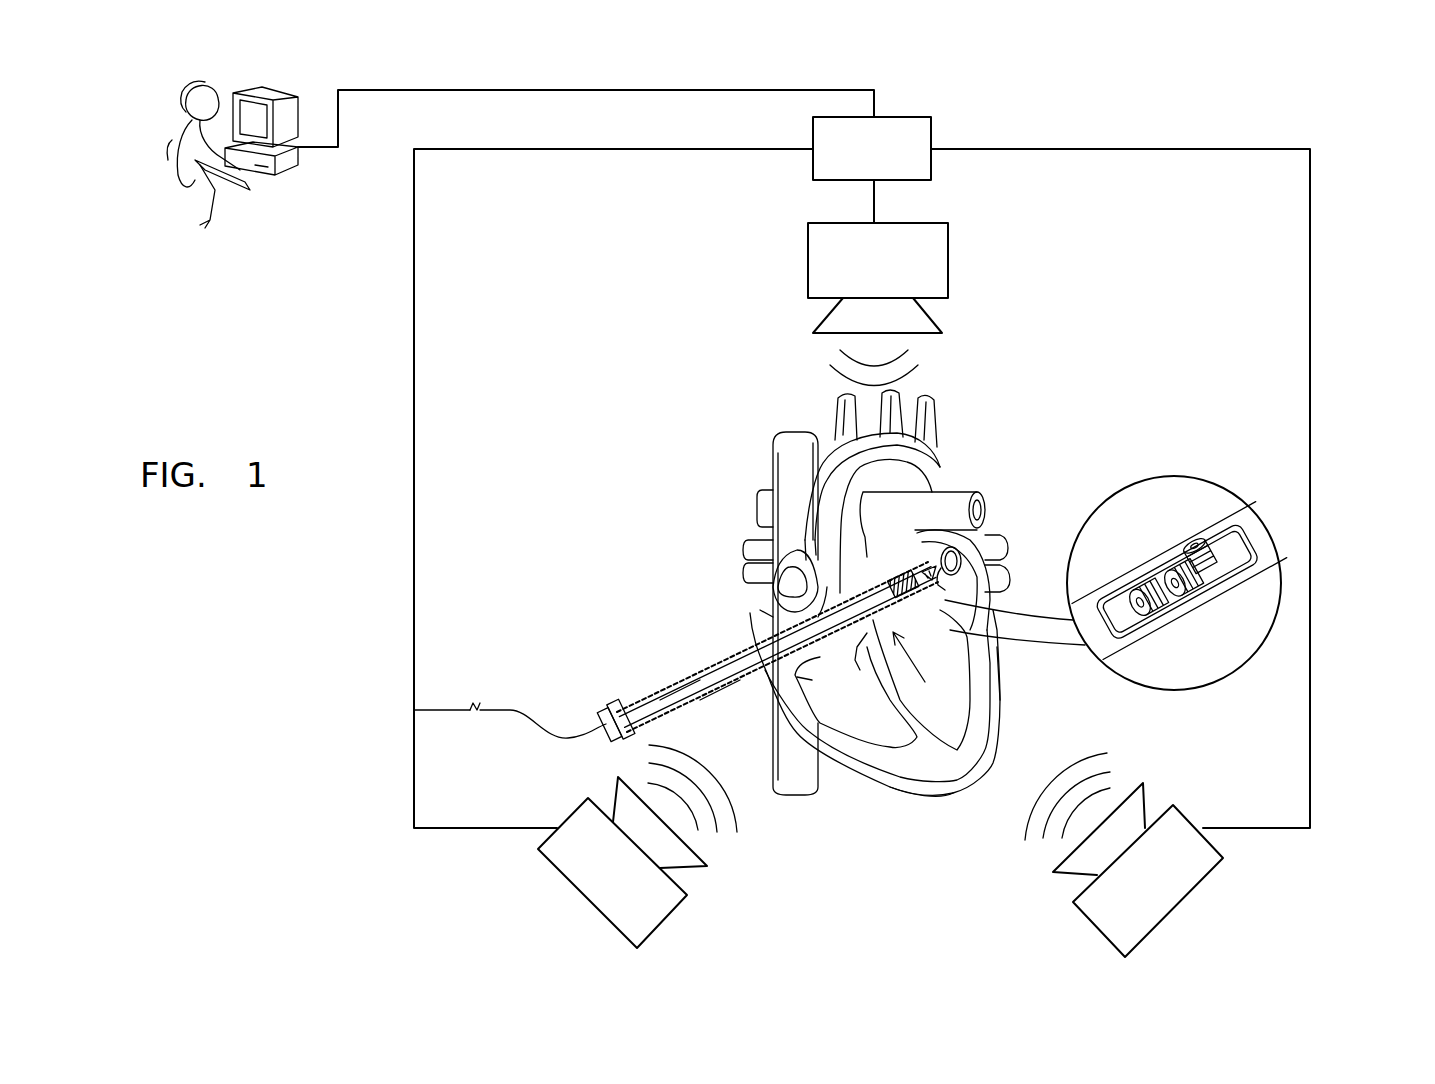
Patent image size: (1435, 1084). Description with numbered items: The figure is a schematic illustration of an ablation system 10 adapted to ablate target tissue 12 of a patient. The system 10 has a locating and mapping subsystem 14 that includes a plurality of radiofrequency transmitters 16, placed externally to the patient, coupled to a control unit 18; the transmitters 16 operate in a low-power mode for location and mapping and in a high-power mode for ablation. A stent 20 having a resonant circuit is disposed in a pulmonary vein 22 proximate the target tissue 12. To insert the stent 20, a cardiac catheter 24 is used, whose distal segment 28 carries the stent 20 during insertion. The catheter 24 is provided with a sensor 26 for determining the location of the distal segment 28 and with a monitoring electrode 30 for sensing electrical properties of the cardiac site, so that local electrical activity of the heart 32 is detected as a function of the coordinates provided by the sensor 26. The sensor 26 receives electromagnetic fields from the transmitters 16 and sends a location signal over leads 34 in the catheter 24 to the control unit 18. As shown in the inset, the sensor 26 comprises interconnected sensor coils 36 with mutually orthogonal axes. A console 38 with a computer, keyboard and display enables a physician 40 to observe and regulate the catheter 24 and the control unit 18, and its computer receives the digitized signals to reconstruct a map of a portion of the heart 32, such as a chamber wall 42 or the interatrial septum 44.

The ablation system 10 is at (1335, 226).
The target tissue 12 is at (912, 551).
The locating and mapping subsystem 14 is at (962, 116).
The radiofrequency transmitters 16 is at (948, 268).
The control unit 18 is at (813, 160).
The stent 20 is at (955, 576).
The pulmonary vein 22 is at (1004, 545).
The cardiac catheter 24 is at (652, 688).
The sensor 26 is at (884, 581).
The distal segment 28 is at (921, 670).
The monitoring electrode 30 is at (920, 600).
The heart 32 is at (886, 784).
The leads 34 is at (712, 665).
The sensor coils 36 is at (1160, 562).
The console 38 is at (284, 105).
The physician 40 is at (173, 112).
The chamber wall 42 is at (1002, 677).
The interatrial septum 44 is at (860, 640).